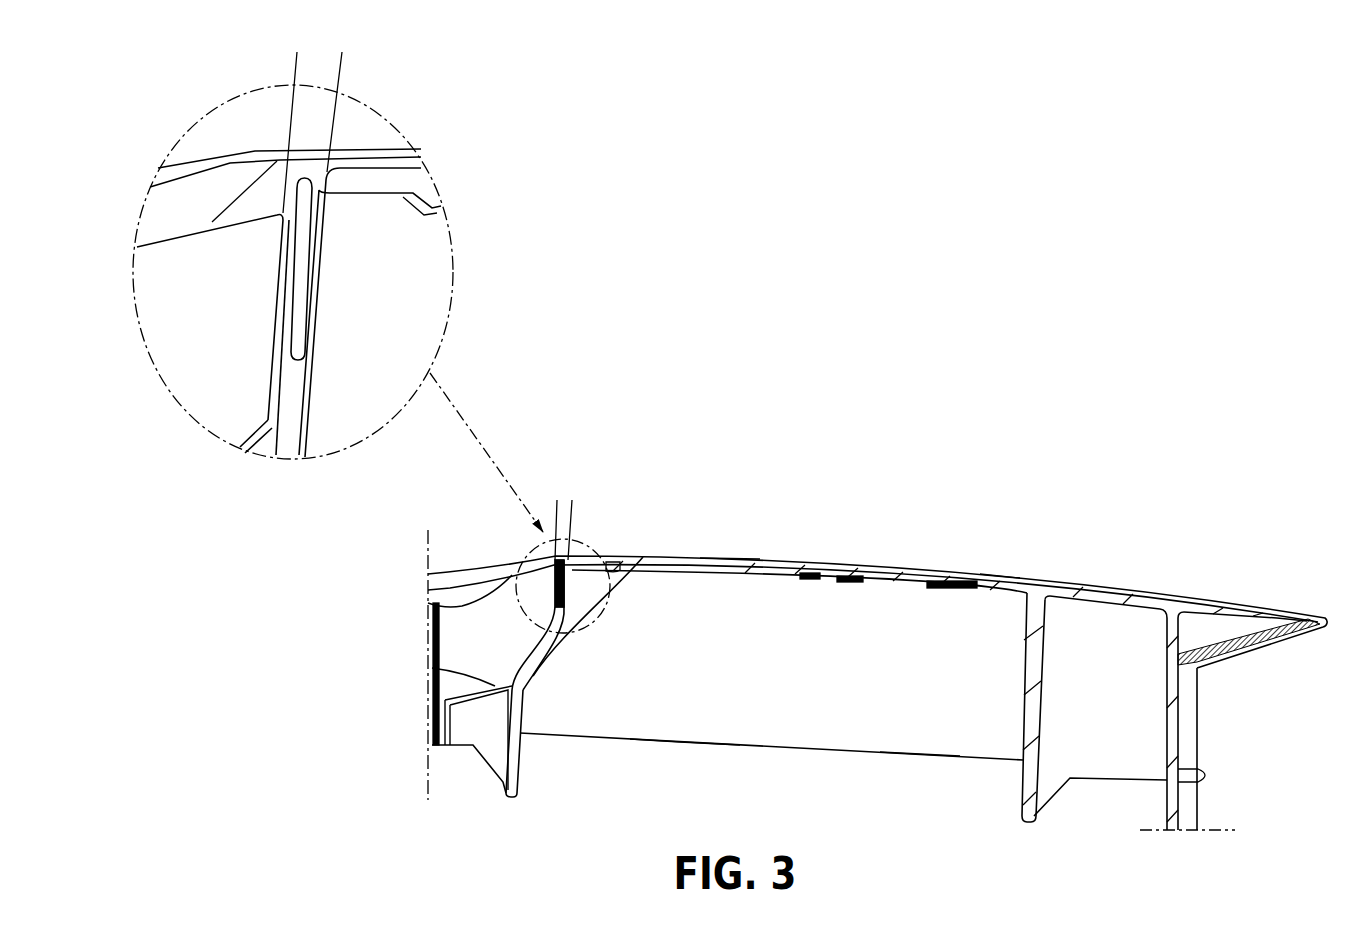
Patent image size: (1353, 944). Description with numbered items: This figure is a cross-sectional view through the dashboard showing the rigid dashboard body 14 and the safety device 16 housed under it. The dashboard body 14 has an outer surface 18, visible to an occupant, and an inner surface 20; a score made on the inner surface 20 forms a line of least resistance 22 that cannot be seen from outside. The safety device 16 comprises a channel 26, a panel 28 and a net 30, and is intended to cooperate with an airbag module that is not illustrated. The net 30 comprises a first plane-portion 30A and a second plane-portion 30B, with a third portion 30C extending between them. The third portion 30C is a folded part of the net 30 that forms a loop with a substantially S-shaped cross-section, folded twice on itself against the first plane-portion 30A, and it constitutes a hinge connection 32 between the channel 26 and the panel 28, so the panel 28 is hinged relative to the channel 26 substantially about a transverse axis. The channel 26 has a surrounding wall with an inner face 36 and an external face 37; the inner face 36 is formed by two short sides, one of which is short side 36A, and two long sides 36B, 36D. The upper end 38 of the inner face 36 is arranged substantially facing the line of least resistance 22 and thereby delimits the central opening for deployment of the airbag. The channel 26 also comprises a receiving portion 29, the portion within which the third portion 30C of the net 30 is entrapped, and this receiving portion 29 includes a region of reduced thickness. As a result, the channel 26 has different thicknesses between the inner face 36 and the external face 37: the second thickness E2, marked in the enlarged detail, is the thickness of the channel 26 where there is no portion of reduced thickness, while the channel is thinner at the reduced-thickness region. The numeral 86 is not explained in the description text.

The dashboard body 14 is at (1163, 577).
The safety device 16 is at (923, 720).
The outer surface 18 is at (1003, 578).
The inner surface 20 is at (432, 618).
The line of least resistance 22 is at (1036, 592).
The channel 26 is at (703, 710).
The panel 28 is at (898, 590).
The receiving portion 29 is at (569, 588).
The net 30 is at (781, 558).
The first plane-portion 30A is at (433, 667).
The second plane-portion 30B is at (726, 557).
The third portion 30C is at (553, 582).
The hinge connection 32 is at (559, 583).
The inner face 36 is at (640, 560).
The short side 36A is at (782, 725).
The long side 36B is at (1022, 703).
The long side 36D is at (523, 735).
The external face 37 is at (527, 653).
The upper end 38 is at (1041, 600).
The inner surface 86 is at (653, 700).
The second thickness E2 is at (538, 507).